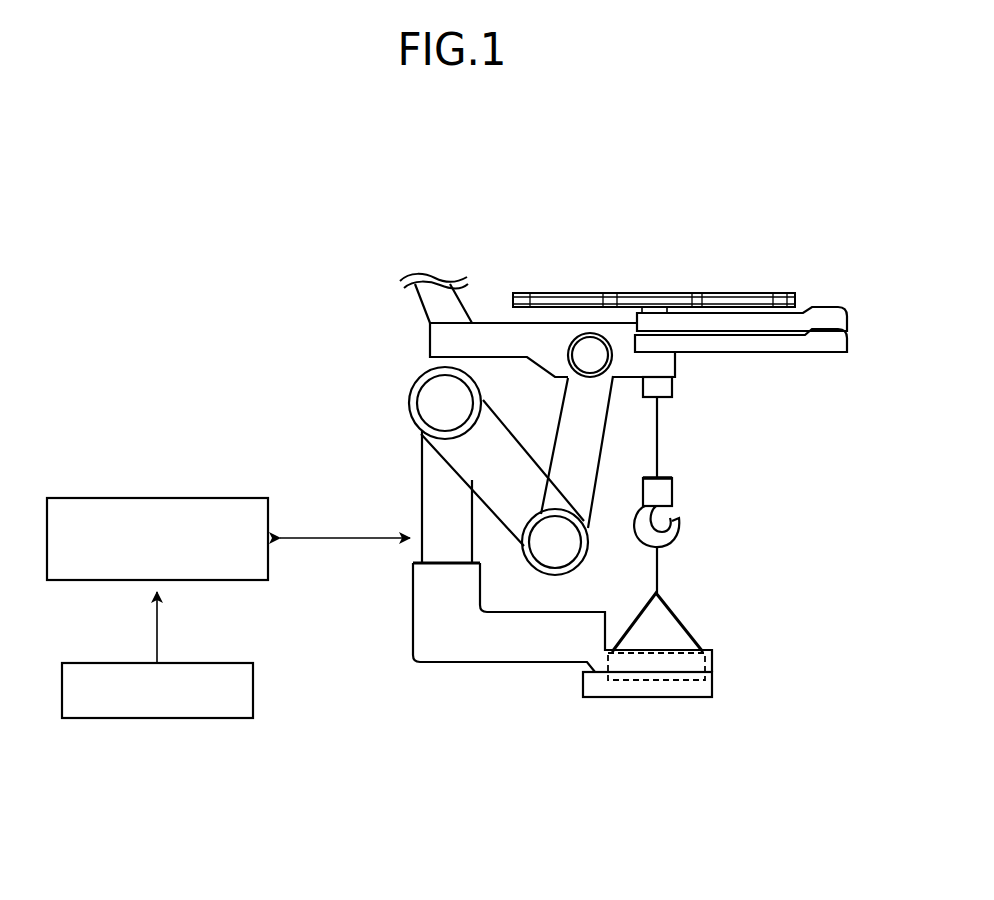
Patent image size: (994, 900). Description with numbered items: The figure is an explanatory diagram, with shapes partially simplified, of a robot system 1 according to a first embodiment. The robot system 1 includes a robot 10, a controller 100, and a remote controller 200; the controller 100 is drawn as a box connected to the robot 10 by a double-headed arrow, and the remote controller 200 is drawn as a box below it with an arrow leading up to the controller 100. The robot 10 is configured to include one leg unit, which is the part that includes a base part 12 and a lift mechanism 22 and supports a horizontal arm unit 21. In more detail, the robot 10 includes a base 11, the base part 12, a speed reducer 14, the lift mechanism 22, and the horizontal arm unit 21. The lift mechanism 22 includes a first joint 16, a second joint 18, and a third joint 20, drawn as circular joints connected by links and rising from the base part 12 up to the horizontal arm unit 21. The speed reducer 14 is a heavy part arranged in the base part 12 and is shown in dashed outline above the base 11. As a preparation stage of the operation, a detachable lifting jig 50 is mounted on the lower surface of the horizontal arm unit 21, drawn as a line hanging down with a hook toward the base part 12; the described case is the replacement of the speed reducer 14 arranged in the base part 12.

The robot system 1 is at (153, 177).
The robot 10 is at (605, 778).
The base 11 is at (705, 687).
The base part 12 is at (478, 652).
The speed reducer 14 is at (663, 681).
The first joint 16 is at (437, 407).
The second joint 18 is at (570, 548).
The third joint 20 is at (586, 357).
The horizontal arm unit 21 is at (406, 326).
The lift mechanism 22 is at (344, 399).
The lifting jig 50 is at (697, 481).
The controller 100 is at (243, 496).
The remote controller 200 is at (231, 662).